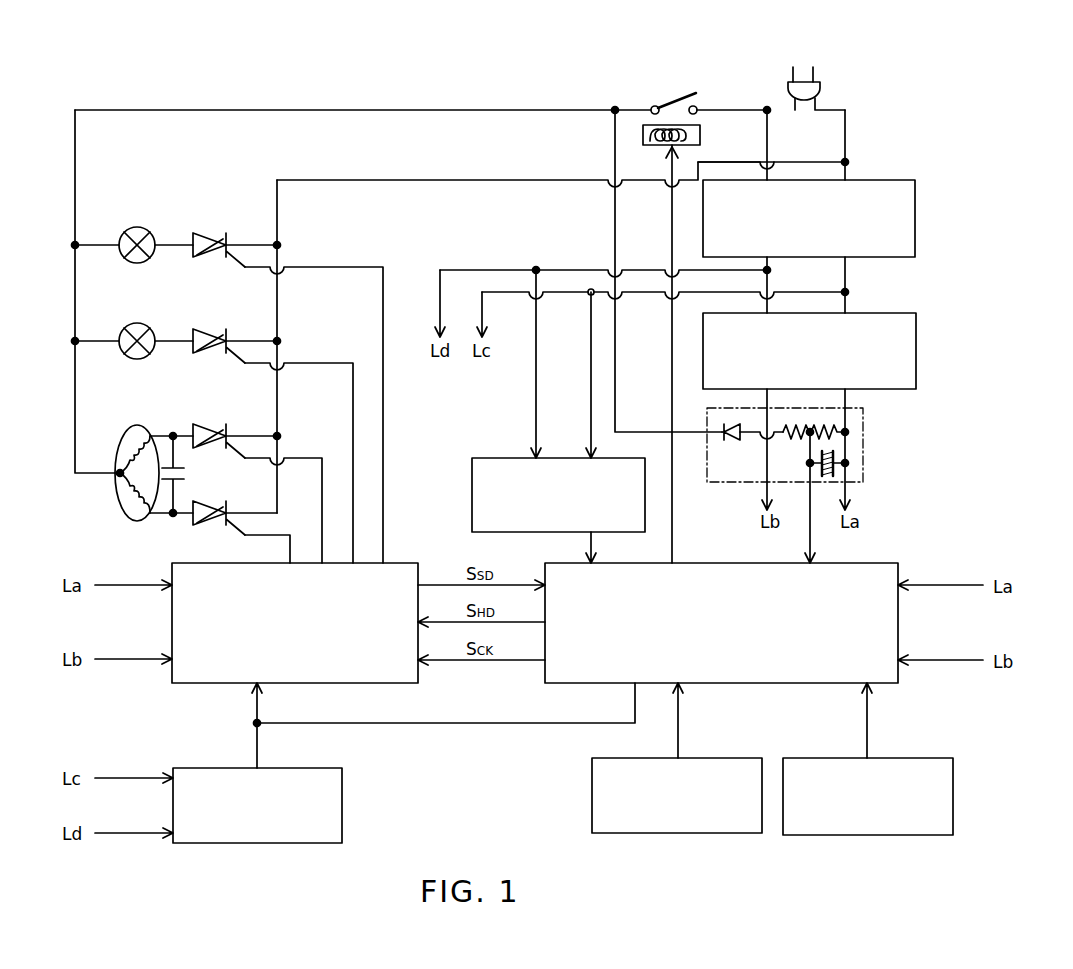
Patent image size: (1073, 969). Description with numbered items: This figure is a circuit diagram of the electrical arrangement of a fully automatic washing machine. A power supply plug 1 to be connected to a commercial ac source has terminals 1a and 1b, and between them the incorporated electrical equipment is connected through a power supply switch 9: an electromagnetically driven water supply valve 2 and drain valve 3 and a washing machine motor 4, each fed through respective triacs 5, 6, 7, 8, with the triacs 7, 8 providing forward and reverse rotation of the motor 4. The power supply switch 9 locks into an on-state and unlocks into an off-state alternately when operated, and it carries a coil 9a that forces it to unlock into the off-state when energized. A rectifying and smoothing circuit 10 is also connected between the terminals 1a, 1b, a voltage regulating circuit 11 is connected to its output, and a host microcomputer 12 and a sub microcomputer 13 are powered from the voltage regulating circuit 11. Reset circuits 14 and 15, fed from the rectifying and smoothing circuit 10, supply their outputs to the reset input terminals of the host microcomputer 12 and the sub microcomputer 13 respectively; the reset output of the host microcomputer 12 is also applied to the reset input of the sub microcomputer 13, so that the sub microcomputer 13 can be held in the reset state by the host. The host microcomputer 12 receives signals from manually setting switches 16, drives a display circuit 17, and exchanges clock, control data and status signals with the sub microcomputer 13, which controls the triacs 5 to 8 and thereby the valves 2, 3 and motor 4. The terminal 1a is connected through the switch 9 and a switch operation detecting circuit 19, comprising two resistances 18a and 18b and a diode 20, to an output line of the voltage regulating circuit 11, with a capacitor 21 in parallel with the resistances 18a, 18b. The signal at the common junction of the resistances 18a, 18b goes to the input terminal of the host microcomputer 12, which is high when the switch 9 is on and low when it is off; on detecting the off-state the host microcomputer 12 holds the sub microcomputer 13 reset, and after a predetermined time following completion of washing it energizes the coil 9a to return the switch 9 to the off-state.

The power supply plug 1 is at (822, 75).
The terminal of power supply plug 1a is at (790, 107).
The terminal of power supply plug 1b is at (820, 103).
The water supply valve 2 is at (137, 227).
The drain valve 3 is at (143, 323).
The washing machine motor 4 is at (128, 514).
The triac 5 is at (213, 228).
The triac 6 is at (213, 325).
The triac 7 is at (213, 420).
The triac 8 is at (213, 498).
The power supply switch 9 is at (672, 90).
The coil 9a is at (643, 133).
The rectifying and smoothing circuit 10 is at (868, 180).
The voltage regulating circuit 11 is at (885, 313).
The host microcomputer 12 is at (878, 563).
The sub microcomputer 13 is at (196, 683).
The reset circuit 14 is at (472, 513).
The reset circuit 15 is at (342, 800).
The manually setting switches 16 is at (953, 795).
The display circuit 17 is at (592, 794).
The resistance 18a is at (828, 422).
The resistance 18b is at (806, 440).
The switch operation detecting circuit 19 is at (865, 455).
The diode 20 is at (740, 440).
The capacitor 21 is at (825, 483).